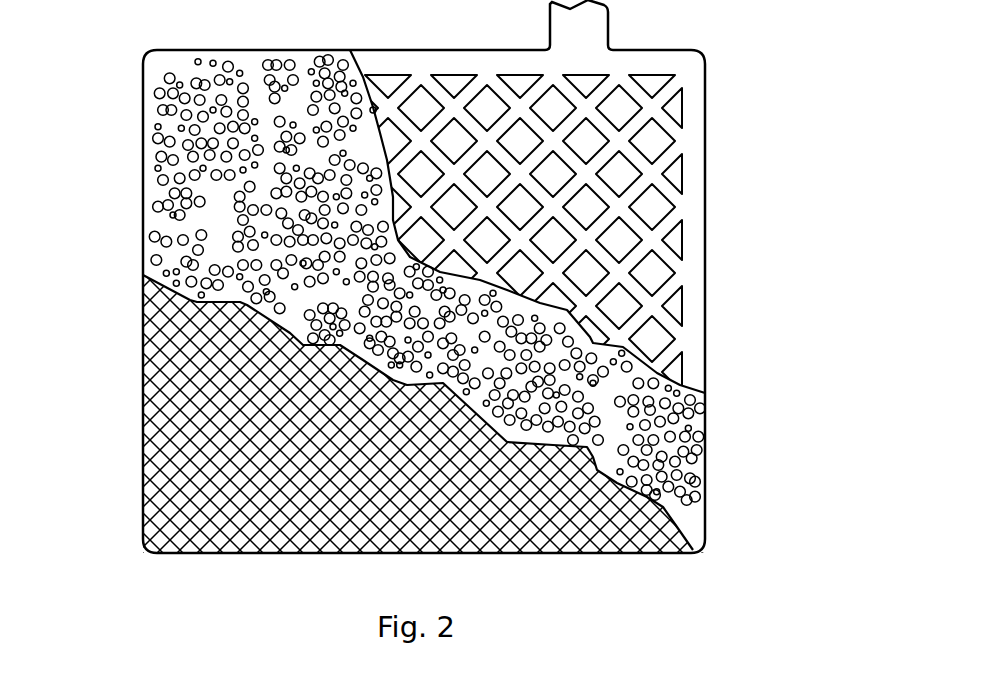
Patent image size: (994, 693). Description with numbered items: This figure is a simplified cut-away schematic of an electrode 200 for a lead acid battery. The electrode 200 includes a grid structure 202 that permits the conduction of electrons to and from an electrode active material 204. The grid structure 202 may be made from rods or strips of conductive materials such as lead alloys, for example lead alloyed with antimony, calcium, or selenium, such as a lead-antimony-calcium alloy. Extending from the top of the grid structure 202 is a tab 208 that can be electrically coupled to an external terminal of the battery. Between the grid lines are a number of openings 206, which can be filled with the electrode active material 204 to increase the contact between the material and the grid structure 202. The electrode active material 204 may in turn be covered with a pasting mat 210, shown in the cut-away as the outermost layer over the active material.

The electrode 200 is at (478, 276).
The grid structure 202 is at (705, 325).
The electrode active material 204 is at (267, 171).
The openings 206 is at (670, 152).
The tab 208 is at (583, 26).
The pasting mat 210 is at (237, 398).